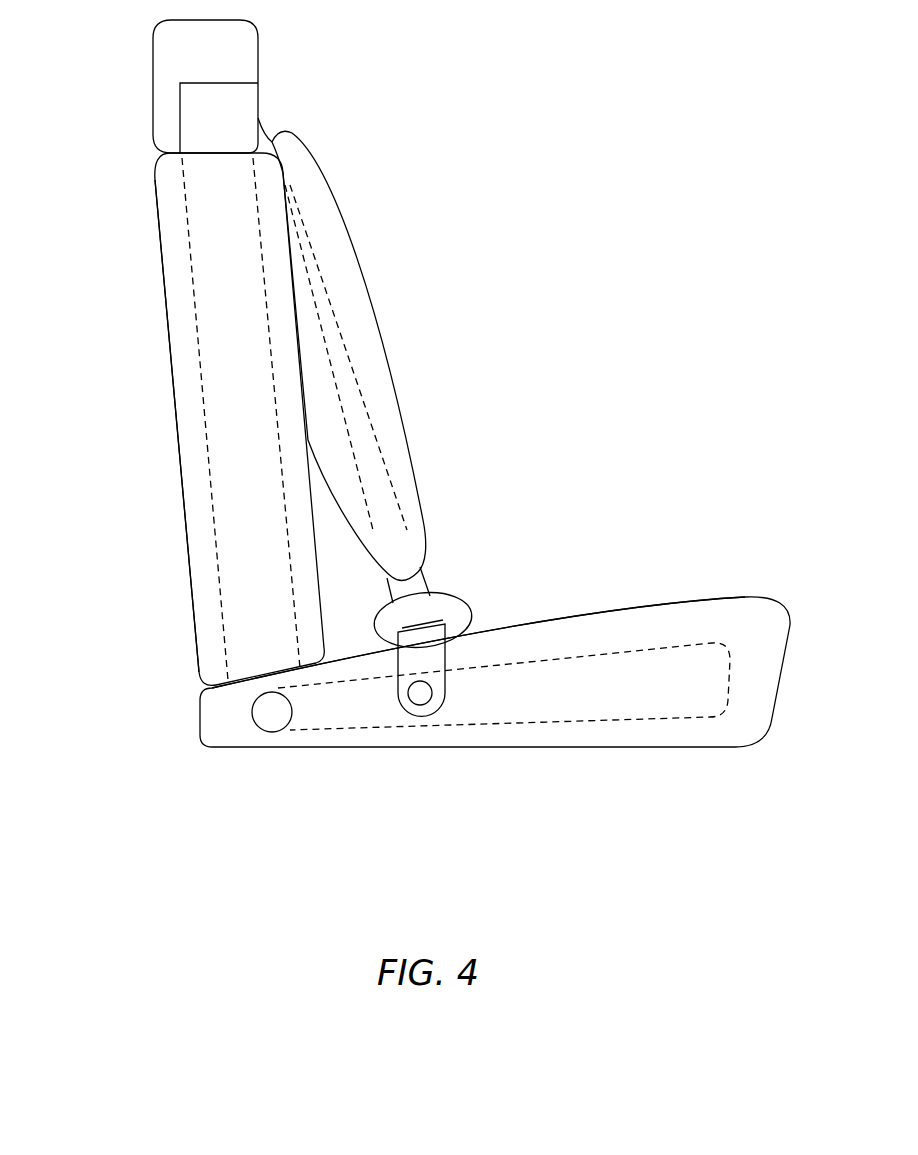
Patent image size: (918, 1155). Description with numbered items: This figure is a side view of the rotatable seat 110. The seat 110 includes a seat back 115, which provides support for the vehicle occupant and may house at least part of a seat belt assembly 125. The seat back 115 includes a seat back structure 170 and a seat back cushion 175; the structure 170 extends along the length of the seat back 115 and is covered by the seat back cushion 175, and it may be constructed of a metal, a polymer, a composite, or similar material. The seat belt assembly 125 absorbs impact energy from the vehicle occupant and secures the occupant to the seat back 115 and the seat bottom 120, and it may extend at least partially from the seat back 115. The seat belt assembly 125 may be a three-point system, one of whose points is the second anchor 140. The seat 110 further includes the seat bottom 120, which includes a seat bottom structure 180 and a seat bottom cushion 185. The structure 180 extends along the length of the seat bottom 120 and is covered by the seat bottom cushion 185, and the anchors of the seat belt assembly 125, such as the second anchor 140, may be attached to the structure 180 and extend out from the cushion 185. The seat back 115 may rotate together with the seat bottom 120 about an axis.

The rotatable seat 110 is at (672, 20).
The seat back 115 is at (158, 233).
The seat bottom 120 is at (717, 598).
The seat belt assembly 125 is at (233, 102).
The second anchor 140 is at (420, 653).
The seat back structure 170 is at (200, 363).
The seat back cushion 175 is at (192, 447).
The seat bottom structure 180 is at (583, 720).
The seat bottom cushion 185 is at (603, 630).